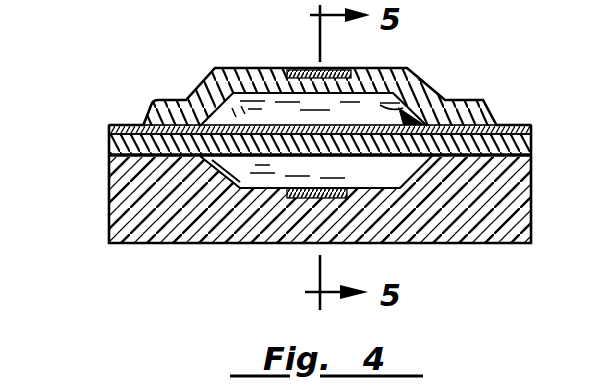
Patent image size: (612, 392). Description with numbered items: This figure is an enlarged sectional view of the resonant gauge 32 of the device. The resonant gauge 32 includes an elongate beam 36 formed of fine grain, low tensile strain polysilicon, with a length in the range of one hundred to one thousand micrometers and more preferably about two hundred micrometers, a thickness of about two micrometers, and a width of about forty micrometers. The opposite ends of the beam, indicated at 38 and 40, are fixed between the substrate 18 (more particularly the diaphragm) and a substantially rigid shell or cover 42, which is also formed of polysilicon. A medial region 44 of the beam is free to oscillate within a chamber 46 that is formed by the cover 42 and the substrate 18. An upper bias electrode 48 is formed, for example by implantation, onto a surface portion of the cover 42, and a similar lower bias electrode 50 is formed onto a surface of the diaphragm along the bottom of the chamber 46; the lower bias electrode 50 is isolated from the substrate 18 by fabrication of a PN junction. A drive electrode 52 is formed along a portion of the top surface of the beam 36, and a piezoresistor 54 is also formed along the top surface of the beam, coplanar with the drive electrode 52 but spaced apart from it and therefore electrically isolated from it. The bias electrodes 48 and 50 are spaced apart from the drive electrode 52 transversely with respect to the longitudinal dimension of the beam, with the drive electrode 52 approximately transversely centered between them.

The substrate 18 is at (125, 197).
The resonant gauge 32 is at (193, 62).
The elongate beam 36 is at (413, 113).
The beam end 38 is at (109, 143).
The beam end 40 is at (531, 147).
The cover 42 is at (272, 77).
The medial region 44 is at (332, 158).
The chamber 46 is at (403, 90).
The upper bias electrode 48 is at (340, 70).
The lower bias electrode 50 is at (312, 243).
The drive electrode 52 is at (517, 125).
The piezoresistor 54 is at (122, 125).